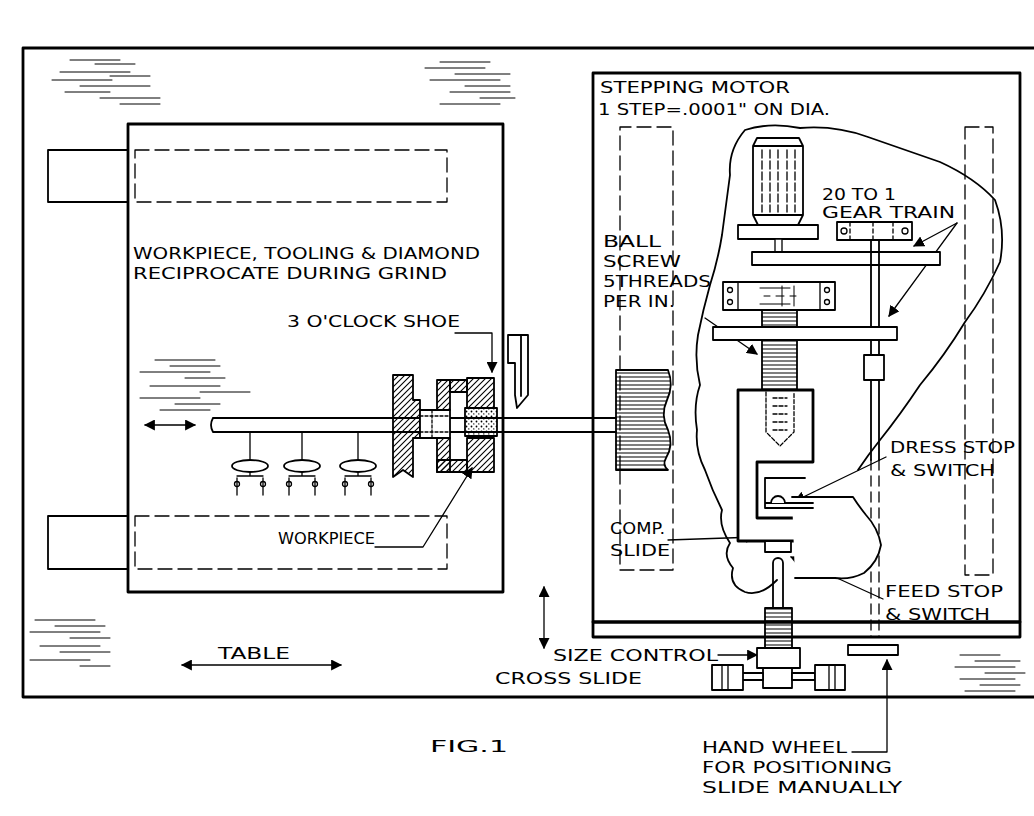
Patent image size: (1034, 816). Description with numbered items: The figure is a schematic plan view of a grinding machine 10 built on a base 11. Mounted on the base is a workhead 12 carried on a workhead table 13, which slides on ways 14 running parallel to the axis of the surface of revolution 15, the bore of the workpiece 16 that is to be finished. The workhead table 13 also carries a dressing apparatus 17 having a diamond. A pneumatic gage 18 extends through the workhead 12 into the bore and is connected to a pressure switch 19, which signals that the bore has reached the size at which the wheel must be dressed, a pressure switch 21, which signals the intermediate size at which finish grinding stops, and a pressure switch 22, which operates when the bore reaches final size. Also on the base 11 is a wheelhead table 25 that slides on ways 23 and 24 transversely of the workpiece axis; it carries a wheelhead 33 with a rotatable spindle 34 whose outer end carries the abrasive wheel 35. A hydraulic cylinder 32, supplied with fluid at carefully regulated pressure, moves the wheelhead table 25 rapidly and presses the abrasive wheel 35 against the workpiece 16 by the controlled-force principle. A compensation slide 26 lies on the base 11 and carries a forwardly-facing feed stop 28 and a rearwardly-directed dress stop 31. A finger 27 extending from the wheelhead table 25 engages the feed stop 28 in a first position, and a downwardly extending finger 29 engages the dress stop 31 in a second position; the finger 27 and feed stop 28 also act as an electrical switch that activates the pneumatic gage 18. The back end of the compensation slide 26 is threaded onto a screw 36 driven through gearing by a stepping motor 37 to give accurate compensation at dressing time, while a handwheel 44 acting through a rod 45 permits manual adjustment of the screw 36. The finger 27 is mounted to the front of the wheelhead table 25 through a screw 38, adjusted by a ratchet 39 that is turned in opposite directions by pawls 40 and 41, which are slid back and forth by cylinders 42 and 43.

The grinding machine 10 is at (724, 47).
The base 11 is at (862, 62).
The workhead 12 is at (437, 471).
The workhead table 13 is at (390, 580).
The ways 14 is at (90, 193).
The surface of revolution 15 is at (485, 438).
The workpiece 16 is at (484, 466).
The dressing apparatus 17 is at (512, 345).
The pneumatic gage 18 is at (428, 411).
The pressure switch 19 is at (232, 467).
The pressure switch 21 is at (300, 460).
The pressure switch 22 is at (357, 460).
The way 23 is at (619, 149).
The way 24 is at (976, 126).
The wheelhead table 25 is at (890, 95).
The compensation slide 26 is at (812, 398).
The finger 27 is at (772, 576).
The feed stop 28 is at (791, 548).
The finger 29 is at (779, 497).
The dress stop 31 is at (790, 508).
The hydraulic cylinder 32 is at (619, 502).
The wheelhead 33 is at (640, 377).
The spindle 34 is at (571, 418).
The abrasive wheel 35 is at (478, 412).
The screw 36 is at (797, 361).
The stepping motor 37 is at (790, 170).
The screw 38 is at (793, 617).
The ratchet 39 is at (783, 689).
The pawl 40 is at (755, 681).
The pawl 41 is at (805, 681).
The cylinder 42 is at (718, 692).
The cylinder 43 is at (838, 692).
The handwheel 44 is at (899, 650).
The rod 45 is at (873, 567).